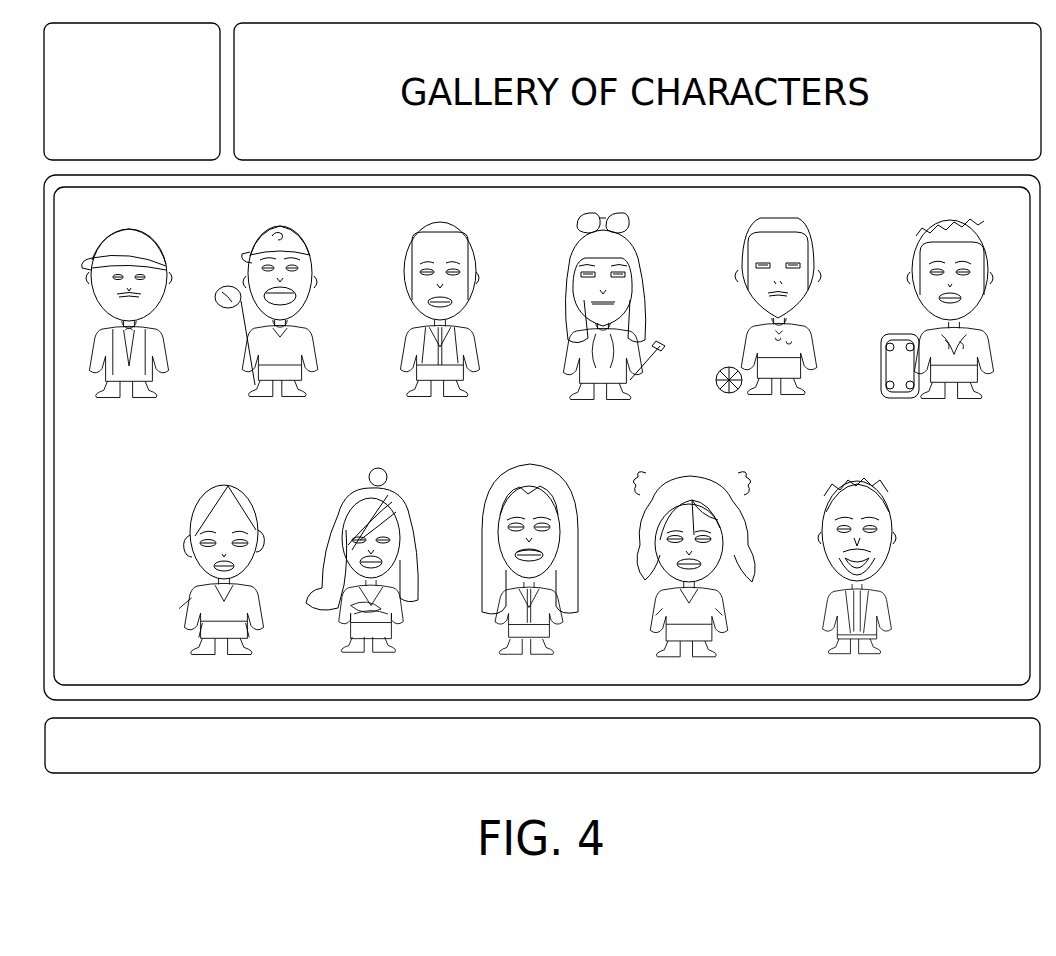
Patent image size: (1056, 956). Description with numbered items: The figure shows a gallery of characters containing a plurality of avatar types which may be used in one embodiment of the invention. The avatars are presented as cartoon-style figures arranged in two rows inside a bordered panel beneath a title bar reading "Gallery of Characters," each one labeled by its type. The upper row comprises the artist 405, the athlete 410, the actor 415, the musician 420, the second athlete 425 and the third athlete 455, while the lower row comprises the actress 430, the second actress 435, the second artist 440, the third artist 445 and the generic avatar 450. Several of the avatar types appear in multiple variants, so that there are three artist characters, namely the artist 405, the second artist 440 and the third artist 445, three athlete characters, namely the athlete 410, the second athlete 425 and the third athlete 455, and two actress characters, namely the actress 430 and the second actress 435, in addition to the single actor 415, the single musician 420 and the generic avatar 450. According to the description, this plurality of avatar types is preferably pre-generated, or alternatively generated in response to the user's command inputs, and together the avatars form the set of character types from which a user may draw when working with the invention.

The artist 405 is at (172, 232).
The athlete 410 is at (320, 243).
The actor 415 is at (493, 245).
The musician 420 is at (653, 255).
The athlete 2 425 is at (825, 255).
The actress 430 is at (170, 590).
The actress 2 435 is at (428, 570).
The artist 2 440 is at (583, 570).
The artist 3 445 is at (750, 572).
The generic 450 is at (907, 570).
The athlete 3 455 is at (953, 442).